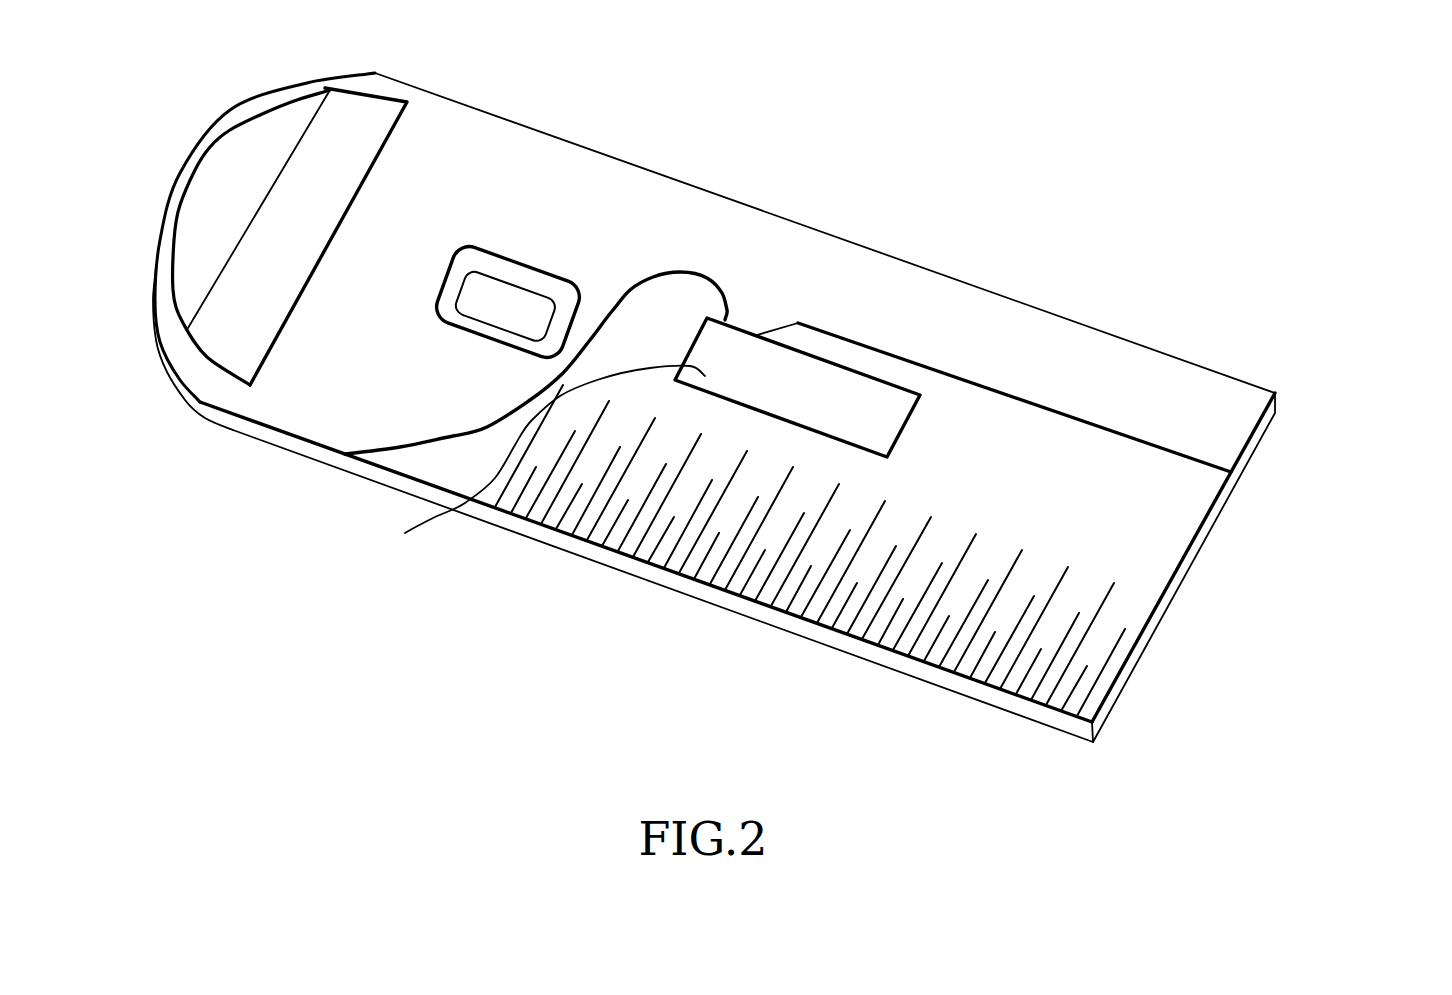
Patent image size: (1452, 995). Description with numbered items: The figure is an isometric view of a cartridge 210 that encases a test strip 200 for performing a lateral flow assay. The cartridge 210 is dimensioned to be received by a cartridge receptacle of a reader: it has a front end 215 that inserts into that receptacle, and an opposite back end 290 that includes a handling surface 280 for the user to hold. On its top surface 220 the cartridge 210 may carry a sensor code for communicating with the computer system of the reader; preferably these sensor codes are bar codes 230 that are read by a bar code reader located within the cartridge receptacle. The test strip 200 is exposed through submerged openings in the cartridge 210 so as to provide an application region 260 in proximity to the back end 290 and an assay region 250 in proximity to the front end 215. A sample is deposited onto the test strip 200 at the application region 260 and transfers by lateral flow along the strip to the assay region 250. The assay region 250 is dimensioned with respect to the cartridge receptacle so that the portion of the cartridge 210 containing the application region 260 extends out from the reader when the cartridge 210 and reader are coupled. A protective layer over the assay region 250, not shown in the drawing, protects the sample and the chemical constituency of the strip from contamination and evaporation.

The test strip 200 is at (530, 324).
The cartridge 210 is at (894, 145).
The front end 215 is at (1168, 598).
The top surface 220 is at (1218, 408).
The bar codes 230 is at (910, 610).
The assay region 250 is at (838, 395).
The application region 260 is at (510, 297).
The handling surface 280 is at (352, 137).
The back end 290 is at (236, 105).